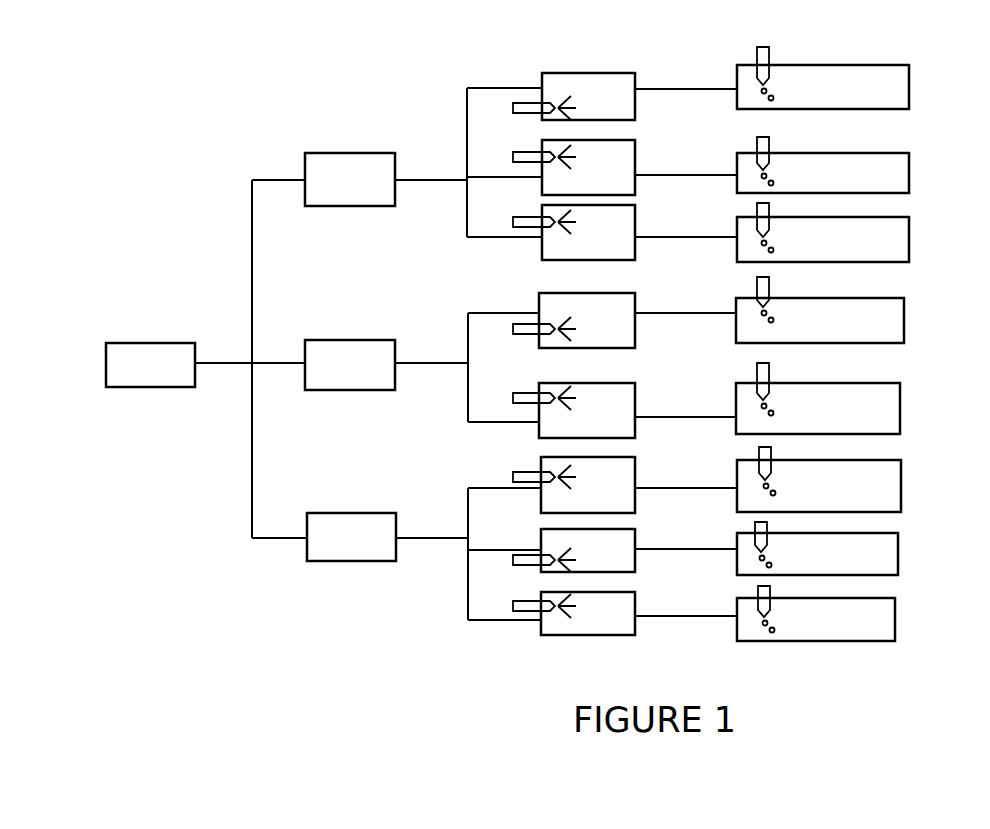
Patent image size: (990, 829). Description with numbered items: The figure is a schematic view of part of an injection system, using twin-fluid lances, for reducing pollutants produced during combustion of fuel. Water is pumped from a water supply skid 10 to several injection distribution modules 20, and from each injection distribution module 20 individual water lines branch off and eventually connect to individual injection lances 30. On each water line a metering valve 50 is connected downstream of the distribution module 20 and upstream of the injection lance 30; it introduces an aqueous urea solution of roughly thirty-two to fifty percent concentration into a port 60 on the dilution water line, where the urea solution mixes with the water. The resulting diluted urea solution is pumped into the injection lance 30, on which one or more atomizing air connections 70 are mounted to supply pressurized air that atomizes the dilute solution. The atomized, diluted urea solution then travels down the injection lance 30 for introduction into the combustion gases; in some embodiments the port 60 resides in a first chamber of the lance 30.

The water supply skid 10 is at (130, 362).
The injection distribution module 20 is at (333, 172).
The injection lance 30 is at (890, 85).
The metering valve 50 is at (515, 157).
The port 60 is at (612, 87).
The atomizing air connection 70 is at (766, 45).